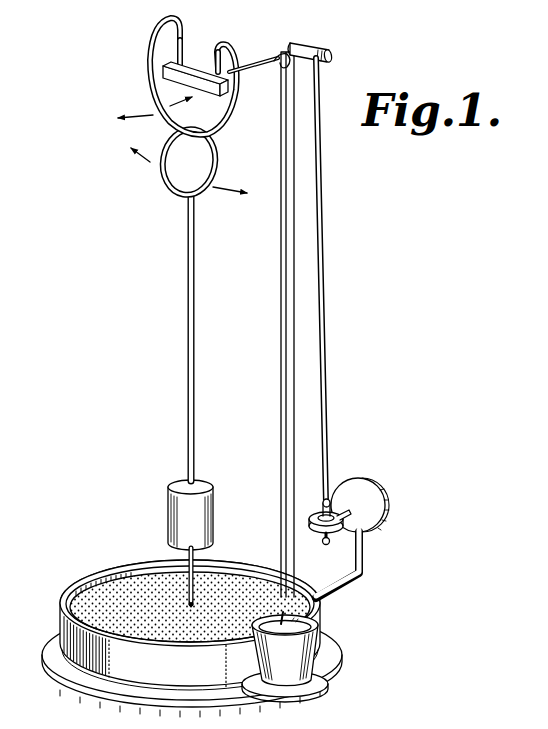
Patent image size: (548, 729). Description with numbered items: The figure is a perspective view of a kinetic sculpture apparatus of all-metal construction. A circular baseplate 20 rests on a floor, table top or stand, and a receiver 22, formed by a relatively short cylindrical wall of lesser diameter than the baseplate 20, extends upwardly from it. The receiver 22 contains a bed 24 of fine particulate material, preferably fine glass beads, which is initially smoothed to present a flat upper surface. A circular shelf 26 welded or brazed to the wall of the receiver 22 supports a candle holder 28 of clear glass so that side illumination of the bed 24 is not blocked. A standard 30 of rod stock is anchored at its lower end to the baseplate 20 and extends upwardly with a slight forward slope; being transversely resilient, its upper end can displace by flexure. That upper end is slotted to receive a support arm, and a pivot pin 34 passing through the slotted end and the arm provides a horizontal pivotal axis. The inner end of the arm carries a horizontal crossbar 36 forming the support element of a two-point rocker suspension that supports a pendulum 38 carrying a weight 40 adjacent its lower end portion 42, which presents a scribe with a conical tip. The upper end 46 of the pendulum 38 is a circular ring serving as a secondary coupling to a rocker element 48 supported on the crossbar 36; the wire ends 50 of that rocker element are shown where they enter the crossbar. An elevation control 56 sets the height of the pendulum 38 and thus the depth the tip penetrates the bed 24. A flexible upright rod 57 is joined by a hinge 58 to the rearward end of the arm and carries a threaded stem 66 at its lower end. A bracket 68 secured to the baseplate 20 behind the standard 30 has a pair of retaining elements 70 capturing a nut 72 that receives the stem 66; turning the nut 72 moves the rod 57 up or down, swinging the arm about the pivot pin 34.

The circular baseplate 20 is at (118, 700).
The receiver 22 is at (62, 607).
The bed 24 is at (108, 583).
The circular shelf 26 is at (325, 690).
The candle holder 28 is at (266, 658).
The standard 30 is at (281, 343).
The pivot pin 34 is at (277, 65).
The horizontal crossbar 36 is at (172, 78).
The pendulum 38 is at (186, 435).
The weight 40 is at (170, 514).
The lower end portion 42 is at (197, 592).
The upper end 46 is at (176, 195).
The rocker element 48 is at (224, 133).
The wire ends 50 is at (217, 56).
The elevation control 56 is at (342, 459).
The flexible upright rod 57 is at (324, 252).
The hinge 58 is at (338, 34).
The threaded stem 66 is at (322, 503).
The bracket 68 is at (383, 527).
The retaining elements 70 is at (345, 498).
The nut 72 is at (337, 545).